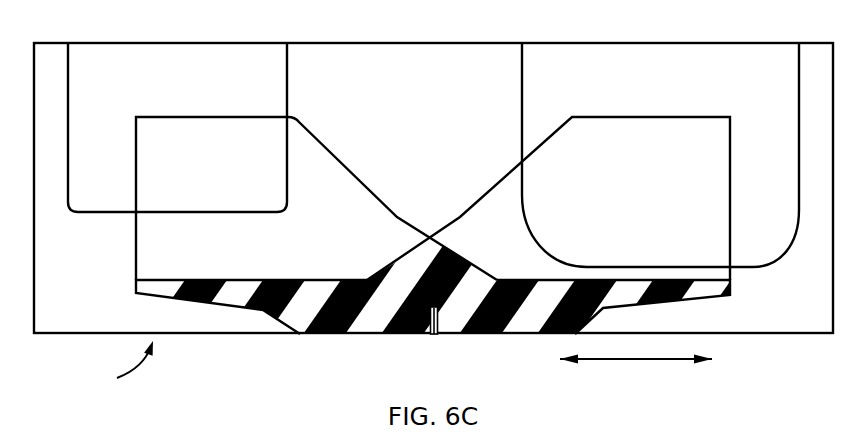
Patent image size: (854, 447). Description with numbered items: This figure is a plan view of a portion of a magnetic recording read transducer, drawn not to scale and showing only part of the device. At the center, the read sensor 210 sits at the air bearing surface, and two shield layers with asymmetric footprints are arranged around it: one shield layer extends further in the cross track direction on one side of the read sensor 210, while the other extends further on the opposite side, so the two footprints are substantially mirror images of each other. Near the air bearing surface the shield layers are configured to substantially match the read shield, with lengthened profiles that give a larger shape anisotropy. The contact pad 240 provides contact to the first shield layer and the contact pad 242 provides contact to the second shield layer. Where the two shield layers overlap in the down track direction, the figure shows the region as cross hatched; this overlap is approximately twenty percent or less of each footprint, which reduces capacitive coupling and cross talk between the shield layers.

The contact pad 242 is at (282, 161).
The contact pad 240 is at (583, 161).
The read sensor 210 is at (434, 308).